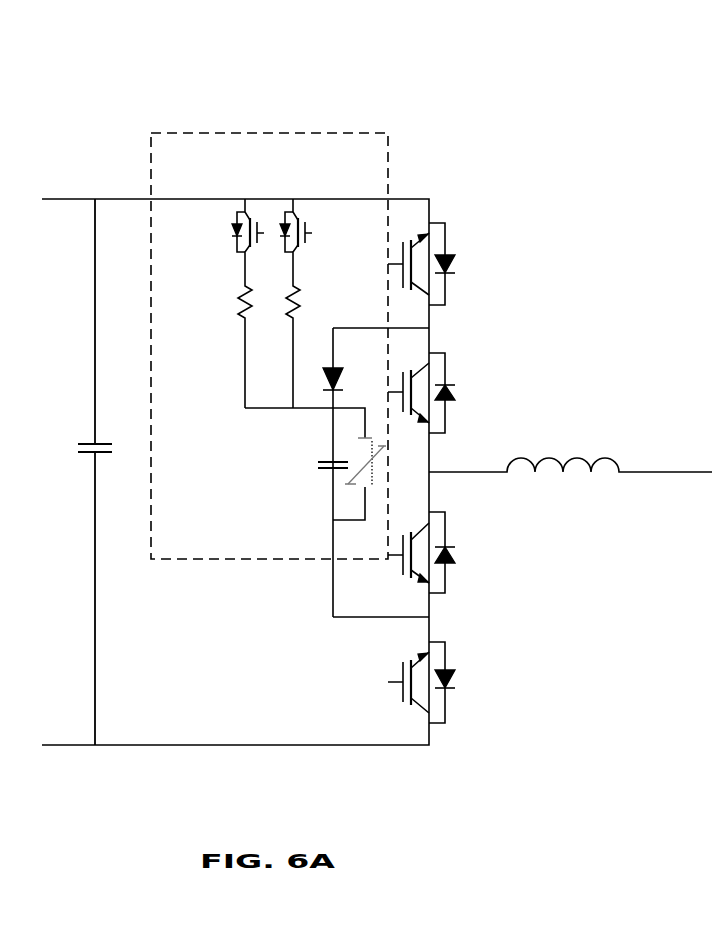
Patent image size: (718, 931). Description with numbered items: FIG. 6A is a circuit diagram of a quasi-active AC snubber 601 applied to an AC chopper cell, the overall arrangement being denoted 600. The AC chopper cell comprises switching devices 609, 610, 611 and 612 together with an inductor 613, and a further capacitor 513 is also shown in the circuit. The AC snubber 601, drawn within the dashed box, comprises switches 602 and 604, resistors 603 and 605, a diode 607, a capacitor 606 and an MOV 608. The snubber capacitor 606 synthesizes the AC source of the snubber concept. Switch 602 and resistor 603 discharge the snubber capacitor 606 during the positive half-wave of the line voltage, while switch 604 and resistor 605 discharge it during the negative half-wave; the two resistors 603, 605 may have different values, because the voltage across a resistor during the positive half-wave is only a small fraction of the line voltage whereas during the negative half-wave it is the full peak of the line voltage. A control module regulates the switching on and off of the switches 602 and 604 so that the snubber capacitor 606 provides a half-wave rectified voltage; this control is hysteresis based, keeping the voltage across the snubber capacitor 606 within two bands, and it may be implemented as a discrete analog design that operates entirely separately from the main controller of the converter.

The converter circuit 600 is at (98, 104).
The quasi-active AC snubber 601 is at (288, 188).
The switch 602 is at (306, 230).
The resistor 603 is at (294, 305).
The switch 604 is at (236, 232).
The resistor 605 is at (244, 300).
The snubber capacitor 606 is at (317, 464).
The diode 607 is at (324, 378).
The MOV 608 is at (365, 489).
The switching device 609 is at (445, 236).
The switching device 610 is at (445, 365).
The switching device 611 is at (445, 523).
The switching device 612 is at (445, 653).
The inductor 613 is at (581, 458).
The DC link capacitor 513 is at (95, 441).